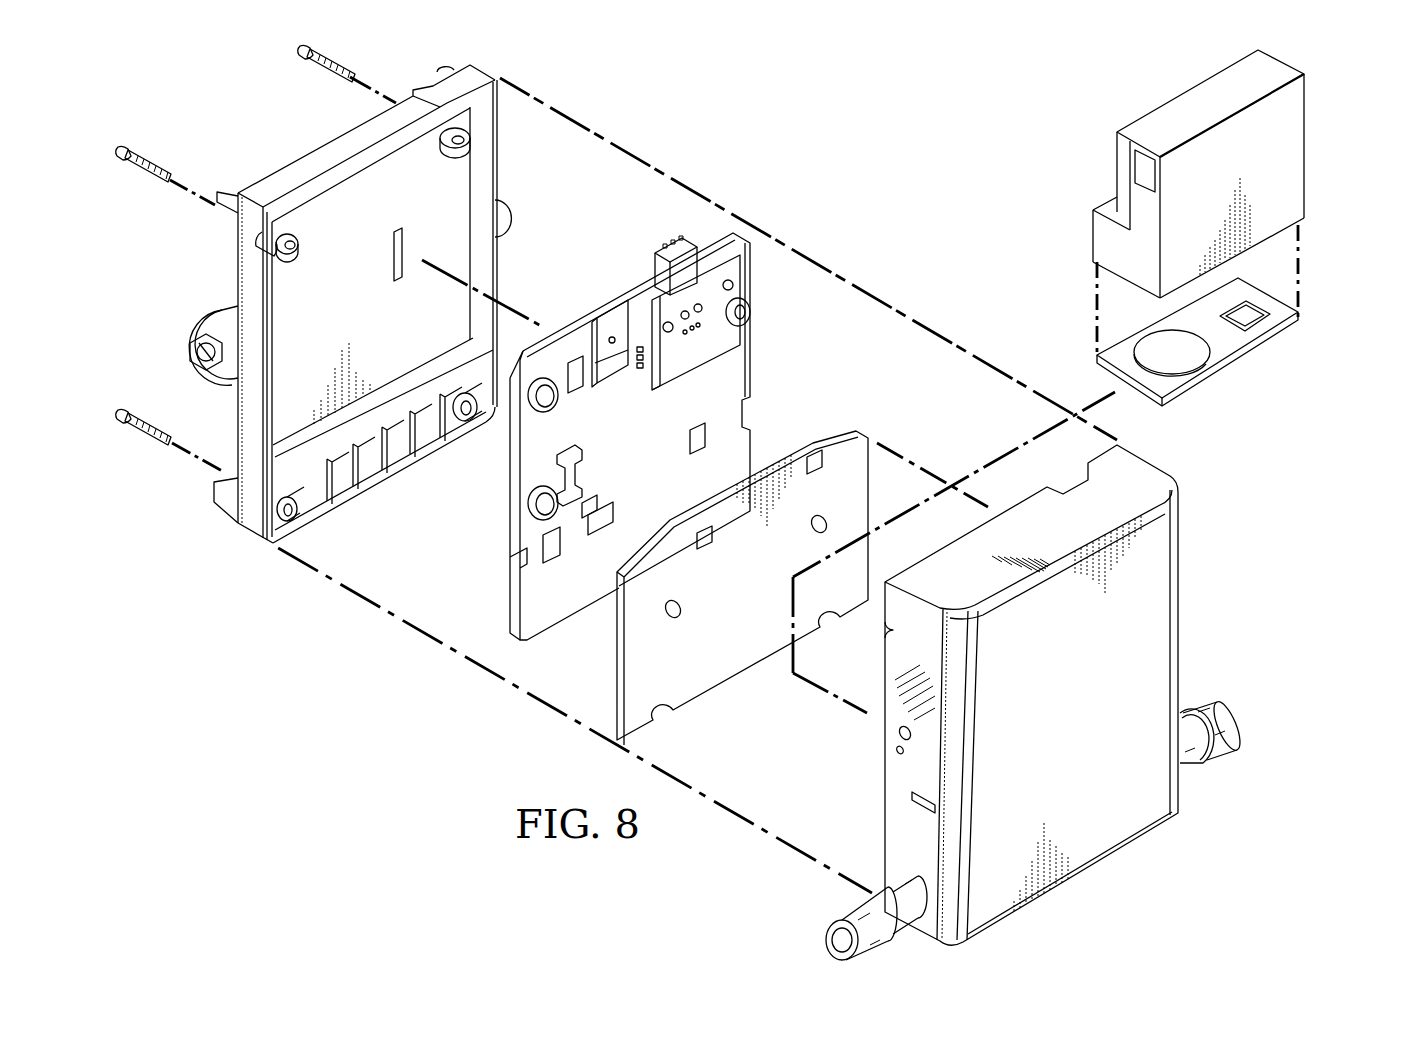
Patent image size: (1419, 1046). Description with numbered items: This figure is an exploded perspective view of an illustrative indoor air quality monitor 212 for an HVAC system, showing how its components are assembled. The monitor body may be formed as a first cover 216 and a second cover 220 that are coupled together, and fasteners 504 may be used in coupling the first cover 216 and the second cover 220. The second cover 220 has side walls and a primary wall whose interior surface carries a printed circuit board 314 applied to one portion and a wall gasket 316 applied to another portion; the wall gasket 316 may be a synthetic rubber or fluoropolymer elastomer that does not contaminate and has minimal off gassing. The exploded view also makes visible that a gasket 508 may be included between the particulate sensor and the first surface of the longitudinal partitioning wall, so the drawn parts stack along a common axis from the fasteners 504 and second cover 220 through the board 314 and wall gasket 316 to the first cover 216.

The fasteners 504 is at (150, 161).
The second cover 220 is at (313, 148).
The printed circuit board 314 is at (603, 311).
The wall gasket 316 is at (720, 690).
The first cover 216 is at (1105, 863).
The indoor air quality monitor 212 is at (1305, 146).
The gasket 508 is at (1228, 360).